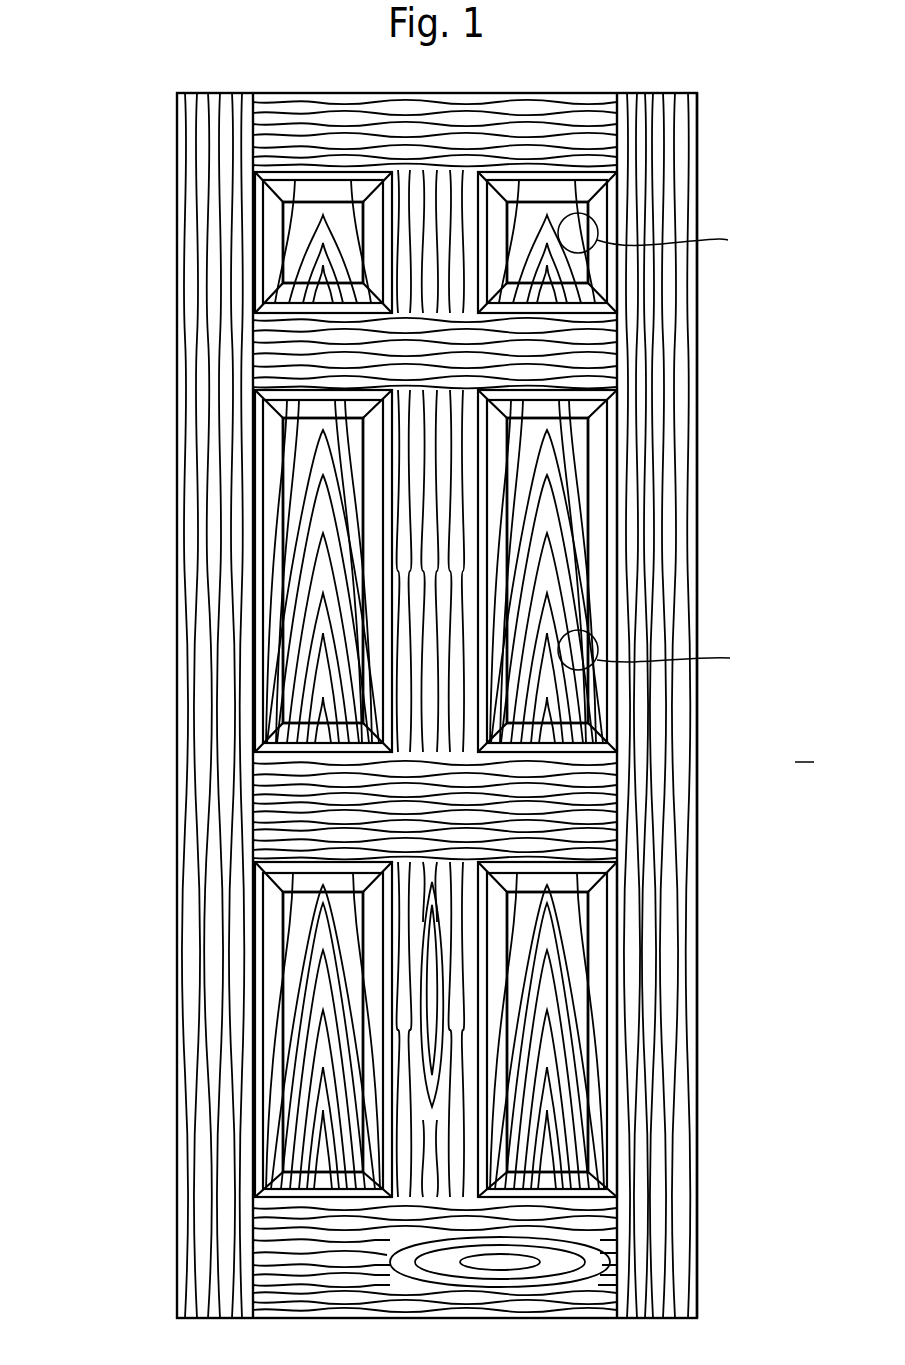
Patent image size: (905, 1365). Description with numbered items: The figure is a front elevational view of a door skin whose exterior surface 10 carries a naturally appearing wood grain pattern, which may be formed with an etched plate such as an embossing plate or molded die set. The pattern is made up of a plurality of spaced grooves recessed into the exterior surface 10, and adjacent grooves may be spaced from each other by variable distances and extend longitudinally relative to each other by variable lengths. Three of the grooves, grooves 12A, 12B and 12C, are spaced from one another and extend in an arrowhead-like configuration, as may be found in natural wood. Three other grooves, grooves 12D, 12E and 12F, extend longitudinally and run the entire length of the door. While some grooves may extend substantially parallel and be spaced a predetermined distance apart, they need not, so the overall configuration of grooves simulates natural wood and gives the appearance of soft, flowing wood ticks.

The exterior surface 10 is at (136, 628).
The groove 12A is at (583, 1023).
The groove 12B is at (587, 1058).
The groove 12C is at (587, 1093).
The groove 12D is at (683, 868).
The groove 12E is at (694, 908).
The groove 12F is at (704, 949).